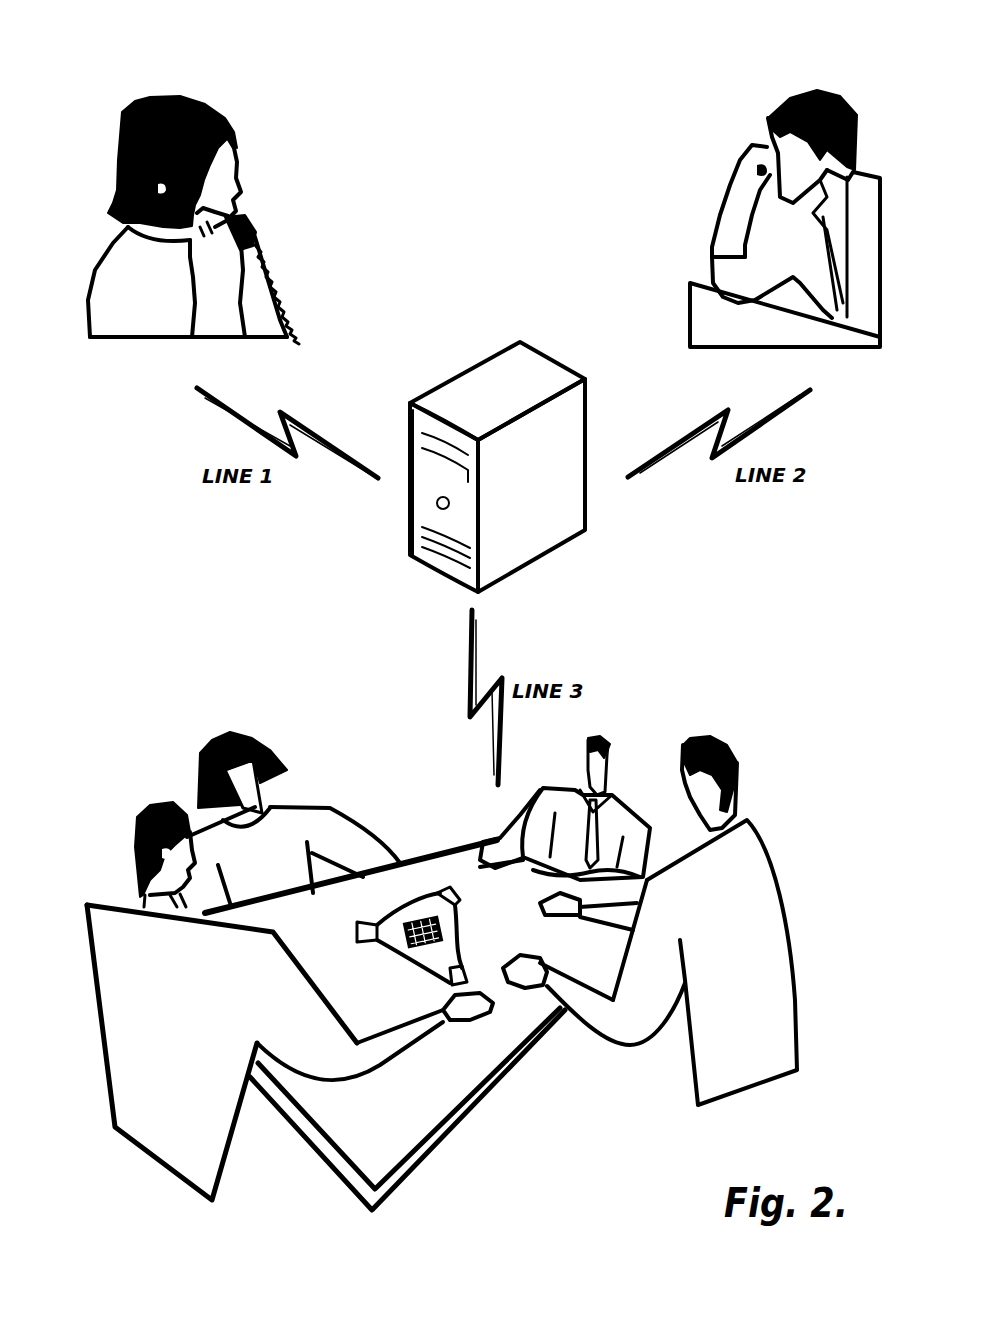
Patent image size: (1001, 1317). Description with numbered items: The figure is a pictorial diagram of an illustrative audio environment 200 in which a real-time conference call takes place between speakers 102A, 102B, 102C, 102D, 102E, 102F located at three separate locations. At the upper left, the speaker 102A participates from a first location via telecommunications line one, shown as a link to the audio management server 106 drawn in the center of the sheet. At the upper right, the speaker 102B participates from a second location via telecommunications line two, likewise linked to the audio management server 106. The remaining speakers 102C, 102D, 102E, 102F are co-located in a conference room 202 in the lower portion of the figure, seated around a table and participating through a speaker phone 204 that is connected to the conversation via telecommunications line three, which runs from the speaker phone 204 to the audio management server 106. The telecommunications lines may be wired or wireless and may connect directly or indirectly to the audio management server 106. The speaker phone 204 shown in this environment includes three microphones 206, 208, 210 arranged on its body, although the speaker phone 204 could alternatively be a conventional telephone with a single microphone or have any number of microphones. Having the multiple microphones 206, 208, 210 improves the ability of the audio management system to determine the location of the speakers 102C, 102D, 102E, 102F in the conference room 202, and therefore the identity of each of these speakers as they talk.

The audio environment 200 is at (100, 11).
The speaker 102A is at (215, 110).
The speaker 102B is at (780, 113).
The audio management server 106 is at (518, 360).
The conference room 202 is at (120, 676).
The speaker 102C is at (147, 812).
The speaker 102D is at (215, 737).
The speaker 102E is at (600, 738).
The speaker 102F is at (735, 763).
The speaker phone 204 is at (405, 966).
The microphone 206 is at (357, 920).
The microphone 208 is at (438, 885).
The microphone 210 is at (463, 965).